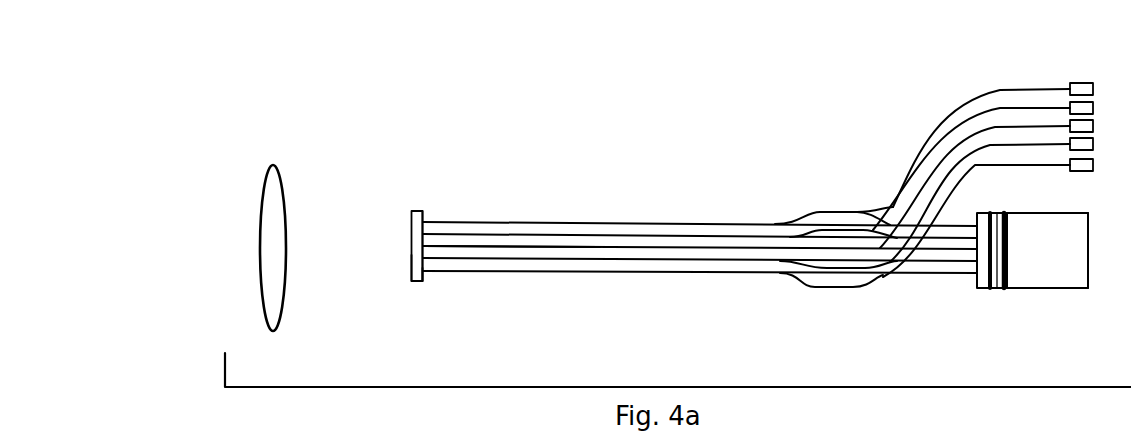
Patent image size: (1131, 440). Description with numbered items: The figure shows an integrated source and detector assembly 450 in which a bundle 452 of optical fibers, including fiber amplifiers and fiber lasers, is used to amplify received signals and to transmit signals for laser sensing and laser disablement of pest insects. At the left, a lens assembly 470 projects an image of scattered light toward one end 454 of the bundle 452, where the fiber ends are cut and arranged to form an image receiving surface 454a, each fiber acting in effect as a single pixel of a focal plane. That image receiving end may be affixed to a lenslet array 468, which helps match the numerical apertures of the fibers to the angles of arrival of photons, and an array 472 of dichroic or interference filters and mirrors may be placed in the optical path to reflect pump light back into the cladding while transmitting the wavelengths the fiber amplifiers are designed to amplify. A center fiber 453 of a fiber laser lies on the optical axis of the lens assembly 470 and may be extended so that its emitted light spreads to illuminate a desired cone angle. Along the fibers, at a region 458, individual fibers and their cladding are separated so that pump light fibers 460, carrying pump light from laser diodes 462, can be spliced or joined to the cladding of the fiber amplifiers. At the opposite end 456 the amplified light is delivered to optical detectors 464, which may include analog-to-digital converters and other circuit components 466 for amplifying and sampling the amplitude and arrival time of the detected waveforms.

The integrated source and detector assembly 450 is at (687, 104).
The bundle of optical fibers 452 is at (498, 274).
The center fiber 453 is at (458, 250).
The end of fiber bundle 454 is at (422, 208).
The image receiving surface 454a is at (423, 274).
The opposite end of fiber bundle 456 is at (975, 214).
The region along fiber lengths 458 is at (829, 207).
The pump light fibers 460 is at (963, 103).
The laser diodes 462 is at (1083, 82).
The optical detectors 464 is at (985, 290).
The circuit components 466 is at (1030, 290).
The lenslet array 468 is at (410, 257).
The lens assembly 470 is at (277, 328).
The array of dichroic or interference filters 472 is at (412, 208).